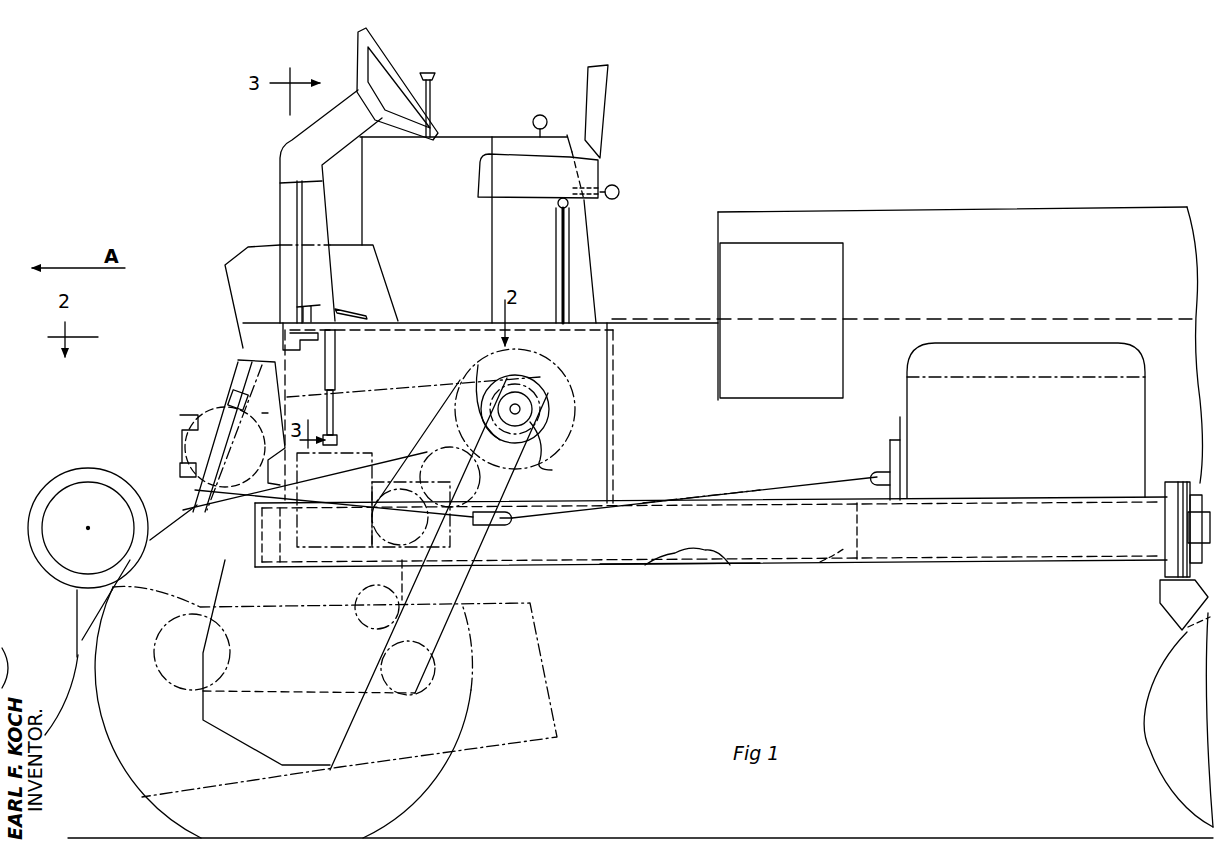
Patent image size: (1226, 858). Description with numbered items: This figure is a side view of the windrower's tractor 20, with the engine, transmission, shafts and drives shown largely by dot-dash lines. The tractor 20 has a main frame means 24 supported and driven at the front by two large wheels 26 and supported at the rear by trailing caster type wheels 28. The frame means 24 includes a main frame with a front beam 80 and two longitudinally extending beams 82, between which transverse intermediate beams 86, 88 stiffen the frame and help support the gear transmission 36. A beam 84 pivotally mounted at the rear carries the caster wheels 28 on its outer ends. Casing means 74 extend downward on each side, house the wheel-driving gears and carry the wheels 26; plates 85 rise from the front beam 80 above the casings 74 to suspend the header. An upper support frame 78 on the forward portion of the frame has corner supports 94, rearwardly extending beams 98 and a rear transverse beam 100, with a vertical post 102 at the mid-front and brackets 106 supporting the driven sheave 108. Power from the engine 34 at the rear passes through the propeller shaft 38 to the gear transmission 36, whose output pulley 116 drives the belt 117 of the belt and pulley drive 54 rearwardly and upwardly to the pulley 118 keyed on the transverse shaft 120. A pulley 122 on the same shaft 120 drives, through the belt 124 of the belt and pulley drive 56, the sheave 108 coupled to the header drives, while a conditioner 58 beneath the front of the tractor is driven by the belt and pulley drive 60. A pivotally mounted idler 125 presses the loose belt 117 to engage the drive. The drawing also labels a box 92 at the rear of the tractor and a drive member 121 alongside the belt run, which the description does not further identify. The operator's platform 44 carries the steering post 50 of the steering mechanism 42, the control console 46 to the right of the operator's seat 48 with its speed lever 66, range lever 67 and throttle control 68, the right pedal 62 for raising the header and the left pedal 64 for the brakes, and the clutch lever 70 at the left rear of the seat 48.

The tractor 20 is at (882, 153).
The main frame means 24 is at (935, 567).
The wheels 26 is at (425, 800).
The caster type wheels 28 is at (1148, 757).
The engine 34 is at (993, 342).
The gear transmission 36 is at (470, 560).
The propeller shaft 38 is at (815, 478).
The steering mechanism 42 is at (258, 338).
The operator's platform 44 is at (598, 272).
The control console 46 is at (483, 137).
The operator's seat 48 is at (606, 128).
The steering post 50 is at (280, 217).
The belt and pulley drive 54 is at (548, 356).
The belt and pulley drive 56 is at (190, 403).
The conditioner 58 is at (560, 737).
The belt and pulley drive 60 is at (520, 487).
The right pedal 62 is at (362, 312).
The left pedal 64 is at (318, 305).
The lever 66 is at (432, 75).
The control lever 67 is at (542, 115).
The throttle control 68 is at (620, 192).
The lever 70 is at (568, 232).
The casing means 74 is at (348, 727).
The upper support frame 78 is at (620, 346).
The front beam 80 is at (255, 532).
The beams 82 is at (645, 565).
The beam 84 is at (1200, 530).
The plates 85 is at (235, 365).
The intermediate beam 86 is at (450, 541).
The intermediate beam 88 is at (855, 560).
The battery box 92 is at (770, 255).
The corner supports 94 is at (262, 378).
The rearwardly extending beams 98 is at (480, 302).
The rear transverse beam 100 is at (613, 320).
The vertical post 102 is at (262, 414).
The brackets 106 is at (185, 476).
The driven sheave 108 is at (170, 448).
The pulley 116 is at (540, 418).
The belt 117 is at (438, 418).
The pulley 118 is at (500, 356).
The transverse shaft 120 is at (522, 412).
The drive belt 121 is at (460, 612).
The pulley 122 is at (480, 390).
The belt 124 is at (385, 357).
The idler 125 is at (407, 447).